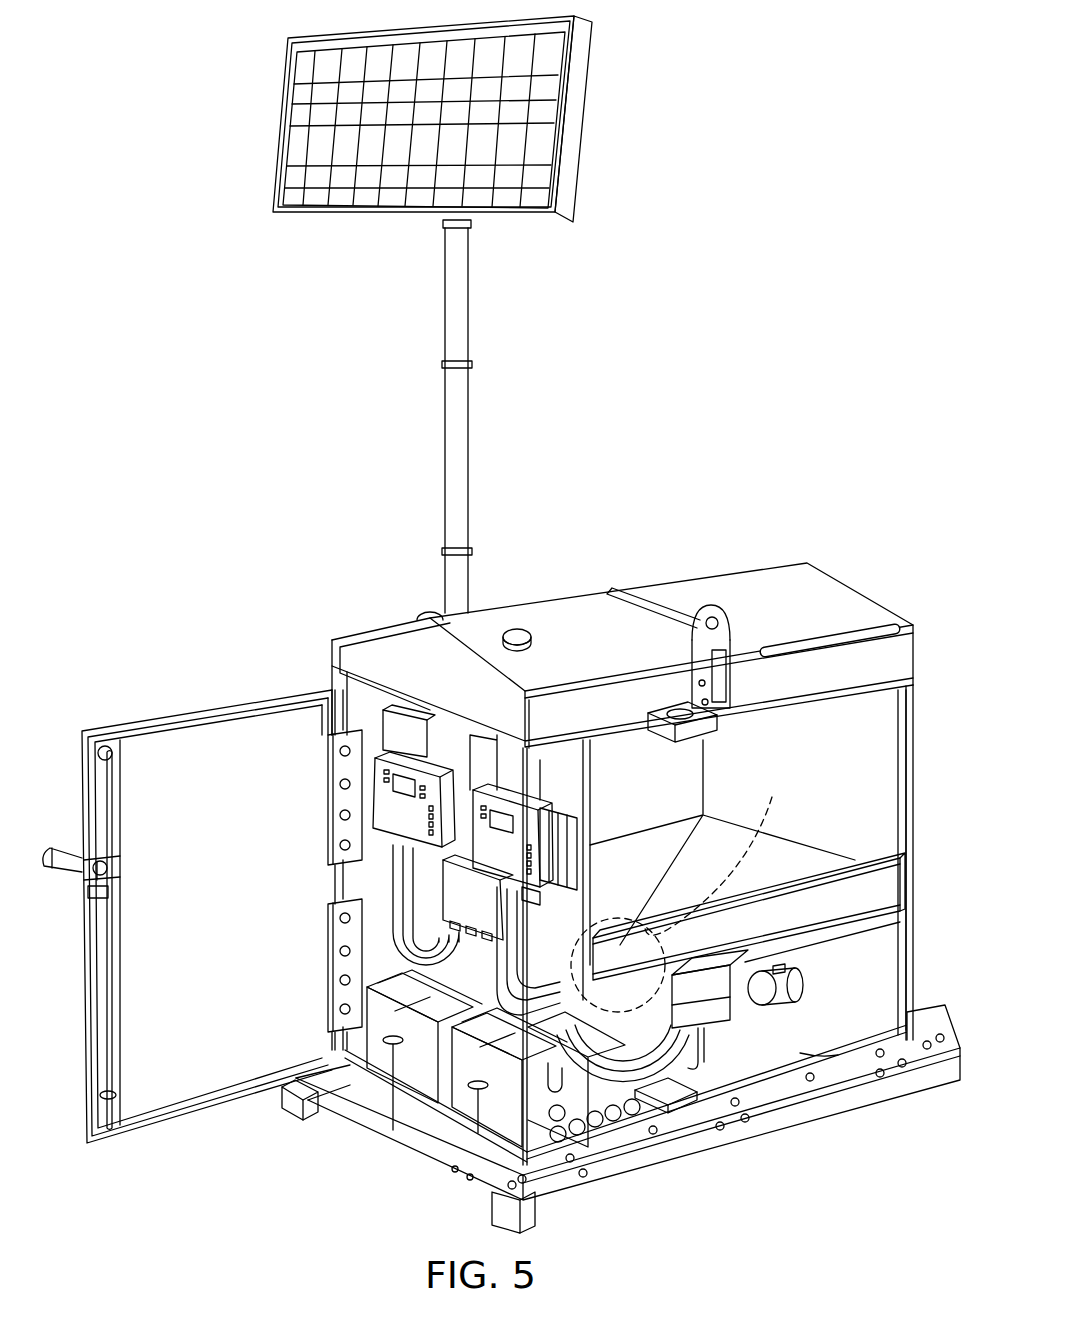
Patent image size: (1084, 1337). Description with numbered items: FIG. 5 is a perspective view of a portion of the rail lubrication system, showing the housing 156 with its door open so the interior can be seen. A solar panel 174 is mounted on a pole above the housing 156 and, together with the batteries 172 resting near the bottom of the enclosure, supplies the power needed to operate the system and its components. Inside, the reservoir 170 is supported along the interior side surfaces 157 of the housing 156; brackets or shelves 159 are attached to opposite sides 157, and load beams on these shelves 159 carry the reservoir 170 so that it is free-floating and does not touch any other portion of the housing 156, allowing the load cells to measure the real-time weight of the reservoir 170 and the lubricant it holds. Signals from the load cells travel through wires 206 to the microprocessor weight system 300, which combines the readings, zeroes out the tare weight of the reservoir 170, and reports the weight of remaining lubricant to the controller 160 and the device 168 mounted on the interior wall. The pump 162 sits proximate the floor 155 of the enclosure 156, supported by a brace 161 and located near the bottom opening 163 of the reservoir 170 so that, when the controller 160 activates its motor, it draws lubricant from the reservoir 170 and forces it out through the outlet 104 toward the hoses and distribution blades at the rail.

The solar panel 174 is at (580, 181).
The device 168 is at (403, 725).
The controller 160 is at (400, 805).
The interior side surfaces 157 is at (338, 882).
The housing 156 is at (918, 679).
The reservoir 170 is at (888, 773).
The shelf 159 is at (885, 868).
The bottom opening 163 is at (697, 960).
The outlet 104 is at (800, 985).
The floor 155 is at (837, 1053).
The pump 162 is at (707, 1013).
The brace 161 is at (703, 1022).
The wires 206 is at (740, 987).
The microprocessor weight system 300 is at (682, 1097).
The batteries 172 is at (420, 1057).